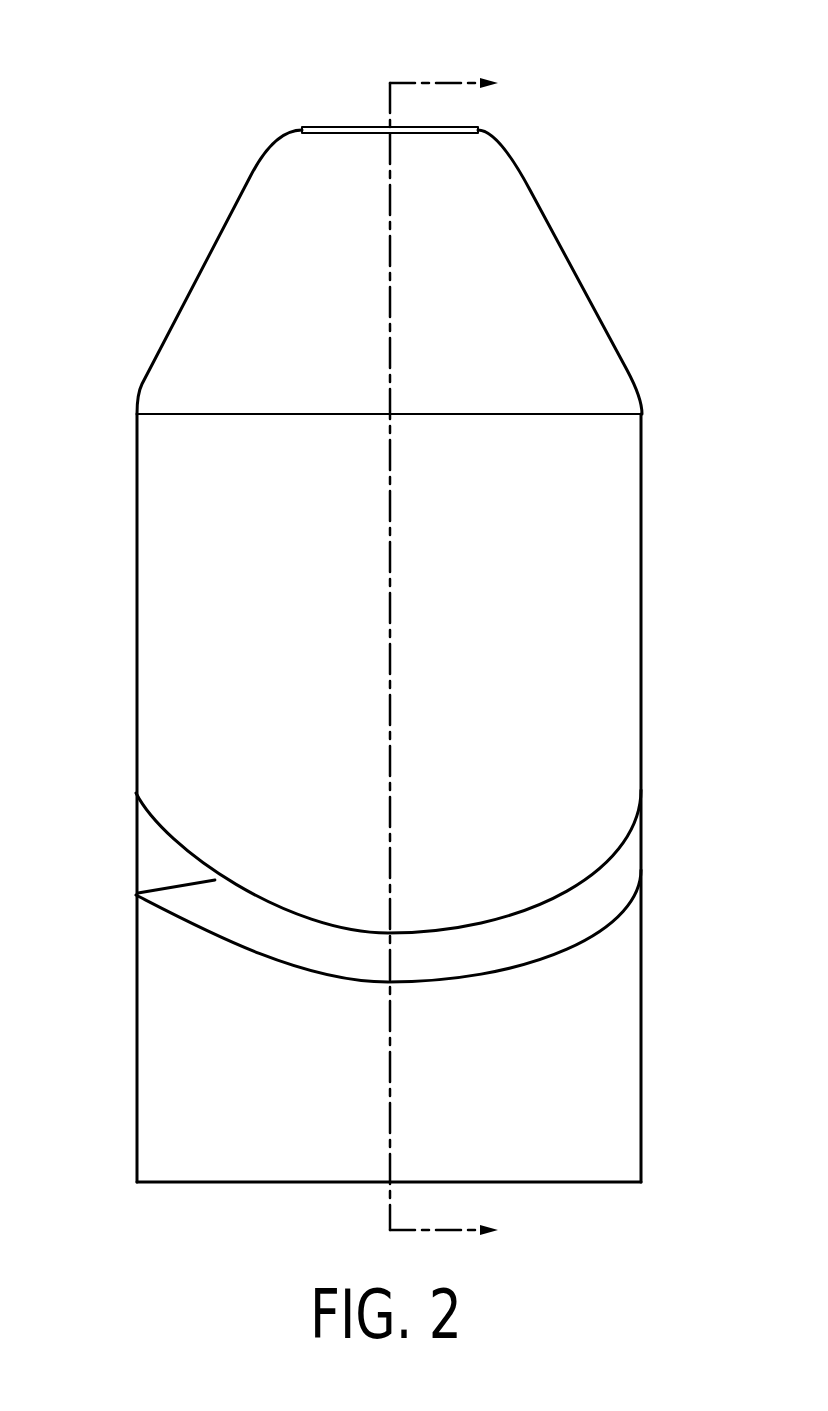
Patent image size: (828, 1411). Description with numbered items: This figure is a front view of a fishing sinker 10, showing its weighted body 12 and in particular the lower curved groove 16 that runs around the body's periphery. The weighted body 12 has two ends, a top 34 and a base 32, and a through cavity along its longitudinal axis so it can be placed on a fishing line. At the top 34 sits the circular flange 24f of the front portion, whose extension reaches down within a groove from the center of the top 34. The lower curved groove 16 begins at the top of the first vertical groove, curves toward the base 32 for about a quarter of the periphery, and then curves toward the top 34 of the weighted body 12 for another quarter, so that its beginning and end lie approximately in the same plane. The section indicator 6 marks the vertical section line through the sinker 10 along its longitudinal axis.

The sinker 10 is at (101, 80).
The weighted body 12 is at (618, 594).
The lower curved groove 16 is at (522, 943).
The circular flange 24f is at (348, 127).
The base 32 is at (570, 1183).
The top 34 is at (493, 140).
The section line 6- 6 is at (458, 660).